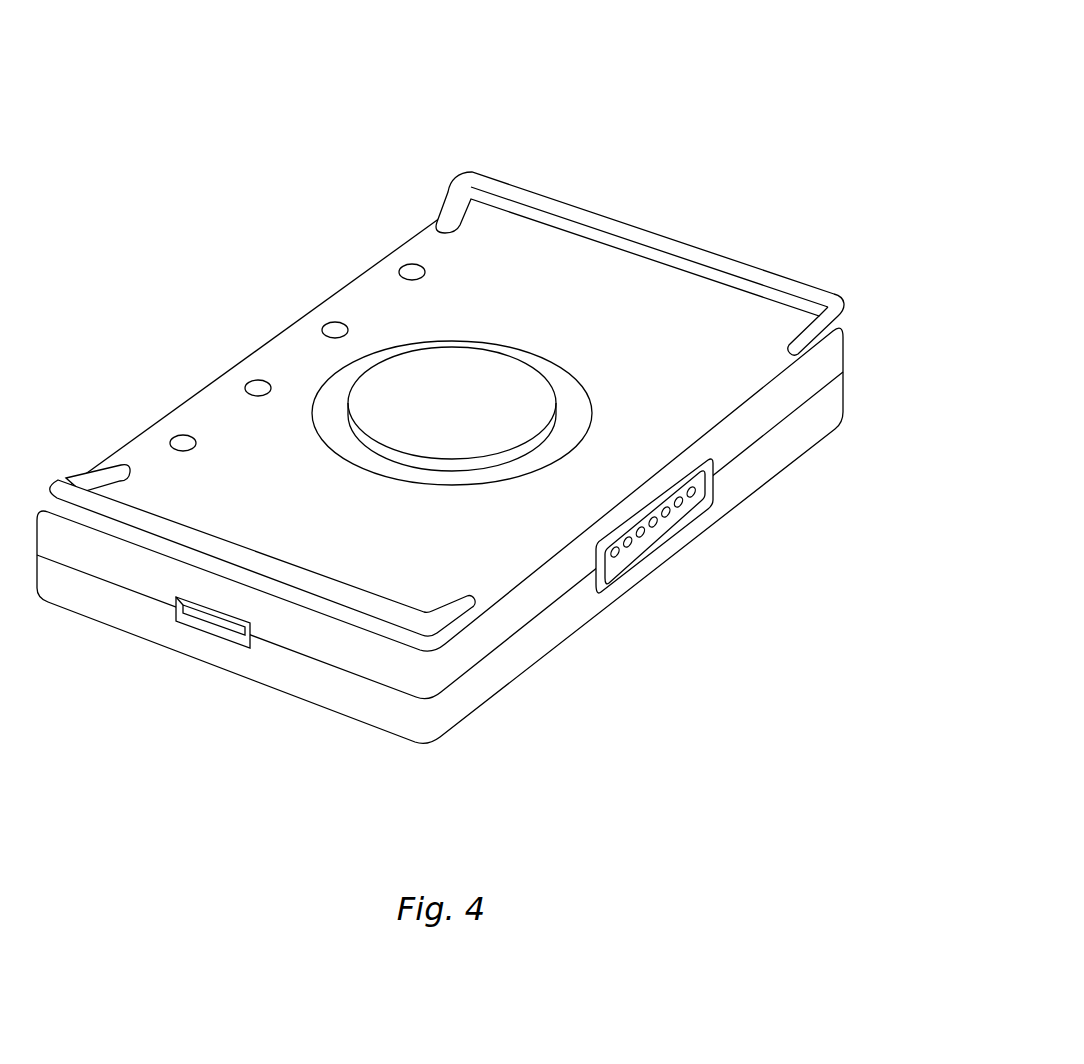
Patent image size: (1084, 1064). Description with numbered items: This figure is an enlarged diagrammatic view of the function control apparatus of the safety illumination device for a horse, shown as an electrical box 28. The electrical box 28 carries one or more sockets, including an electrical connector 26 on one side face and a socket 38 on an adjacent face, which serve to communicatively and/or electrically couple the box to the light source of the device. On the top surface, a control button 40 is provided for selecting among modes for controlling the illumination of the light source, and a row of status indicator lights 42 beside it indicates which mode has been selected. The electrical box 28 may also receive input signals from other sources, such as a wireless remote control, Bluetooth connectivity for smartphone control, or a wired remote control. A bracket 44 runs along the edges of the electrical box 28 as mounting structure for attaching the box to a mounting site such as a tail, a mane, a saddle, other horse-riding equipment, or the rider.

The electrical box 28 is at (440, 441).
The bracket 44 is at (632, 233).
The lights 42 is at (405, 268).
The control button 40 is at (472, 378).
The electrical connector 26 is at (628, 546).
The socket 38 is at (222, 642).